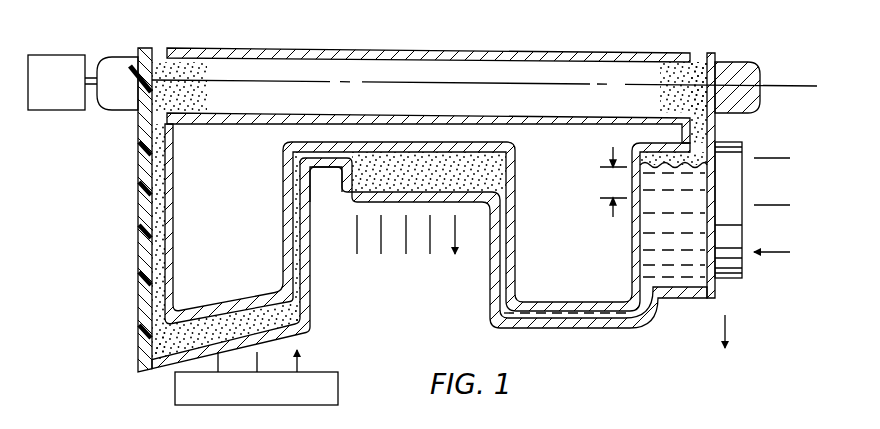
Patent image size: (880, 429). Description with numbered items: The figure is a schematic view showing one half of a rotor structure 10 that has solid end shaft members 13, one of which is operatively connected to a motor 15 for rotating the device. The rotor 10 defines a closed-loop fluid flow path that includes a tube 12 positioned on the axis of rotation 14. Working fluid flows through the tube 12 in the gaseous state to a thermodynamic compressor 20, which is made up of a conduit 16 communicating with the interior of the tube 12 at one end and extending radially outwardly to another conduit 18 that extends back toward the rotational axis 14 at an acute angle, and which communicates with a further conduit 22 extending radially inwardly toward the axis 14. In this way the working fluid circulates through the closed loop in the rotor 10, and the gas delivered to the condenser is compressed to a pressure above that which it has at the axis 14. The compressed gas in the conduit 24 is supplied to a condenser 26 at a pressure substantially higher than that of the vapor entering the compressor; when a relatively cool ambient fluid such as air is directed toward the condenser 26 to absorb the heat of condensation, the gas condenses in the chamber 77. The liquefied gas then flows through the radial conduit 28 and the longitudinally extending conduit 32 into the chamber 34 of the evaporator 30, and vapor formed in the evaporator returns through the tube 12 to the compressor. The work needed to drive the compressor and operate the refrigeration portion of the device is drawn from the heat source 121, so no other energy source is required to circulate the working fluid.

The rotor structure 10 is at (676, 40).
The tube 12 is at (608, 34).
The solid end shaft members 13 is at (107, 57).
The axis of rotation 14 is at (798, 86).
The motor 15 is at (42, 55).
The conduit 16 is at (157, 243).
The conduit 18 is at (293, 320).
The thermodynamic compressor 20 is at (133, 336).
The conduit 22 is at (297, 284).
The conduit 24 is at (328, 168).
The condenser 26 is at (340, 206).
The radial conduit 28 is at (503, 263).
The evaporator 30 is at (693, 304).
The longitudinally extending conduit 32 is at (582, 316).
The chamber 34 is at (697, 279).
The chamber 77 is at (498, 172).
The heat source 121 is at (339, 391).